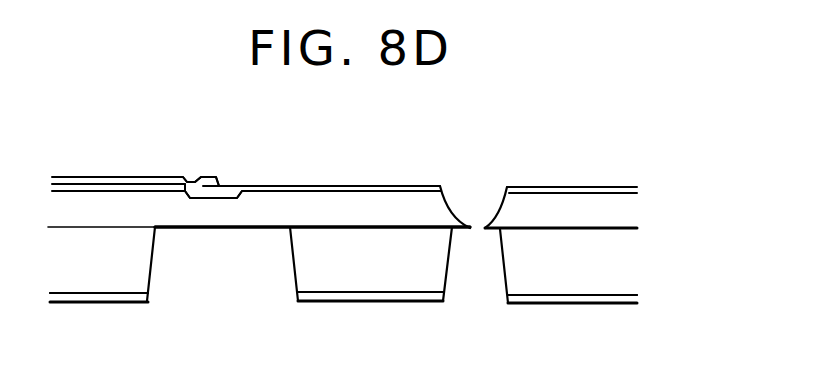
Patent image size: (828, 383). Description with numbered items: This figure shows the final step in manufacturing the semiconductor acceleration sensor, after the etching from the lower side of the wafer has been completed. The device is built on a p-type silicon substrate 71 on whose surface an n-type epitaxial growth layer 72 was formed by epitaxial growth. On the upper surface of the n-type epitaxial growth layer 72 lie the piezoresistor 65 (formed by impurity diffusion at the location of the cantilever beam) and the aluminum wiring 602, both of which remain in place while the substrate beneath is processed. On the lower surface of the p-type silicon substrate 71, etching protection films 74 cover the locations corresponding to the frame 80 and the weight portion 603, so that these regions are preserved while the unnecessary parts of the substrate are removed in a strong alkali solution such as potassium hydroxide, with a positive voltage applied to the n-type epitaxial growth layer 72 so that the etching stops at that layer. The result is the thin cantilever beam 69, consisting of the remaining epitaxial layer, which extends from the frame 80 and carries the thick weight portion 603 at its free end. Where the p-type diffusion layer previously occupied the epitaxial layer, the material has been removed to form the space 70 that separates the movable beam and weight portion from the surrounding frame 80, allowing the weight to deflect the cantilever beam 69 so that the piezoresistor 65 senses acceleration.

The wiring 602 is at (174, 177).
The piezoresistor 65 is at (230, 189).
The space 70 is at (481, 200).
The n-type epitaxial growth layer 72 is at (625, 208).
The p-type silicon substrate 71 is at (632, 258).
The etching protection film 74 is at (635, 296).
The cantilever beam 69 is at (217, 217).
The weight portion 603 is at (368, 285).
The frame 80 is at (93, 282).